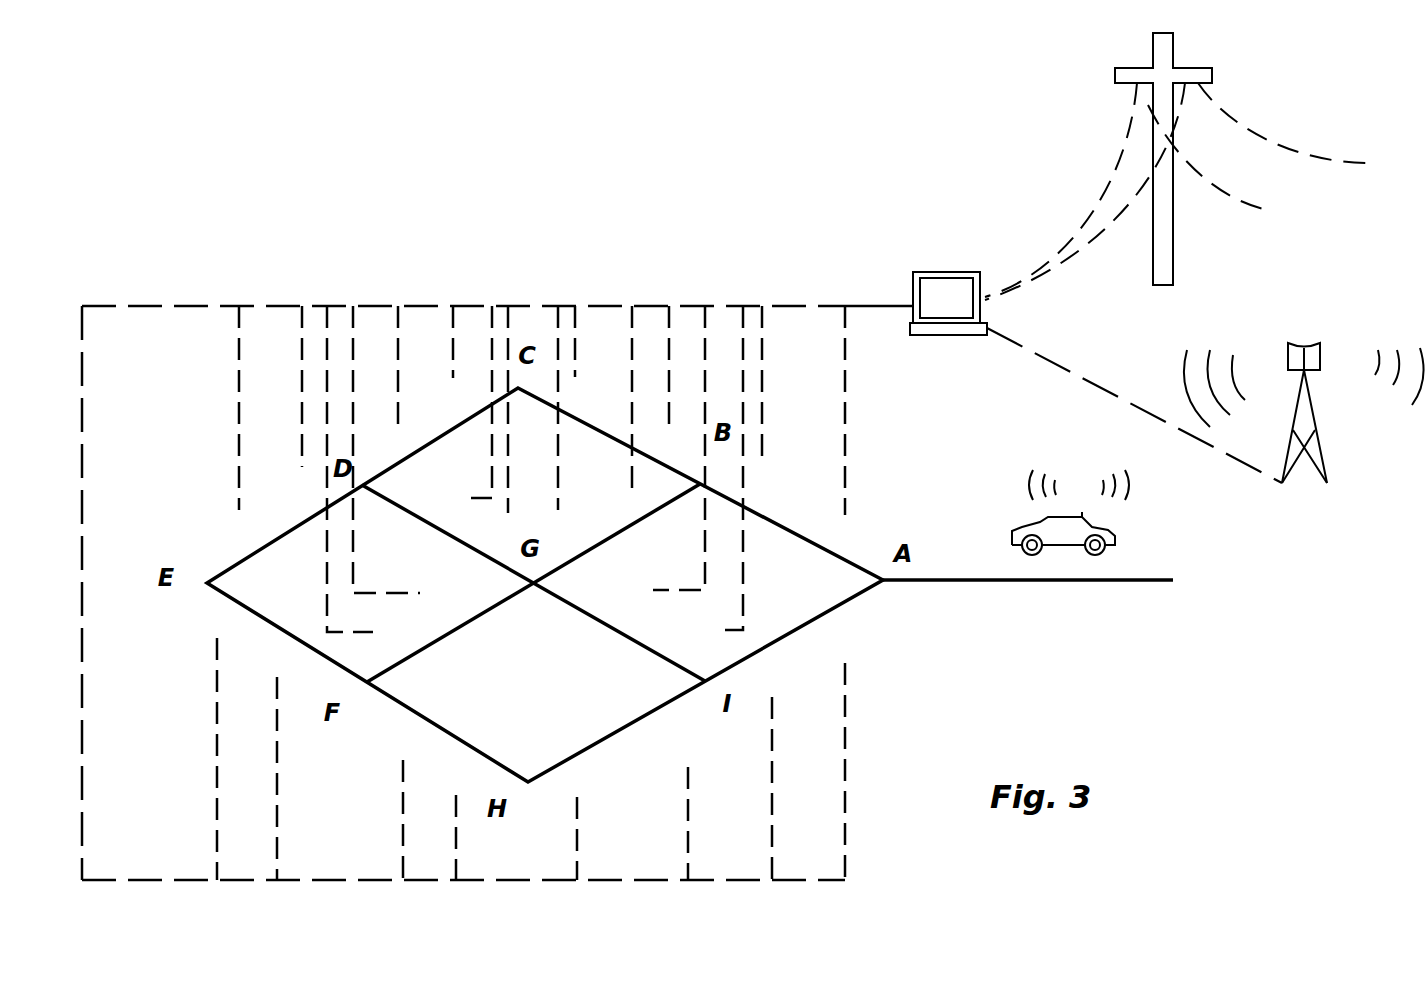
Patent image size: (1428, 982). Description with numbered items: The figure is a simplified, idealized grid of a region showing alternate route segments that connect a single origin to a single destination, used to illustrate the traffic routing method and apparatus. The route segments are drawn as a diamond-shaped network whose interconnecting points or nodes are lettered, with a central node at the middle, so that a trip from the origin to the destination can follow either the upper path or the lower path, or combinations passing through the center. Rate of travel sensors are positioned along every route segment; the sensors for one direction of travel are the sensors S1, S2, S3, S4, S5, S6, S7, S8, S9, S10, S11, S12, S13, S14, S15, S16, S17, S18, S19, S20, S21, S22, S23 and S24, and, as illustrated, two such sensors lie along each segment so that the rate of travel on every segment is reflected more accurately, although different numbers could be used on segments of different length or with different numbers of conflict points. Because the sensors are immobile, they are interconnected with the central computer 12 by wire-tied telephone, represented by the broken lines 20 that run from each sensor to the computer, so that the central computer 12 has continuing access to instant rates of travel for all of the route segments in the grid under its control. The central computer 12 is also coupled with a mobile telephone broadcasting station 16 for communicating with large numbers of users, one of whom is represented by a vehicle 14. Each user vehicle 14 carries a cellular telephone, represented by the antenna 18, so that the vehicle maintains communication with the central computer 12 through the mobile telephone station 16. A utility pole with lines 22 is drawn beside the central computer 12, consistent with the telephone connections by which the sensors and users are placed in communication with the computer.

The central computer 12 is at (985, 310).
The vehicle 14 is at (1027, 530).
The mobile telephone broadcasting station 16 is at (1317, 413).
The antenna 18 is at (1083, 517).
The wire-tied telephone 20 is at (651, 306).
The telephone lines 22 is at (1268, 212).
The rate sensor S1 is at (845, 423).
The rate sensor S2 is at (765, 396).
The rate sensor S3 is at (671, 381).
The rate sensor S4 is at (580, 357).
The rate sensor S5 is at (453, 357).
The rate sensor S6 is at (398, 380).
The rate sensor S7 is at (303, 401).
The rate sensor S8 is at (238, 422).
The rate sensor S9 is at (215, 748).
The rate sensor S10 is at (277, 766).
The rate sensor S11 is at (403, 807).
The rate sensor S12 is at (455, 823).
The rate sensor S13 is at (593, 826).
The rate sensor S14 is at (688, 807).
The rate sensor S15 is at (776, 774).
The rate sensor S16 is at (845, 755).
The rate sensor S17 is at (707, 473).
The rate sensor S18 is at (652, 454).
The rate sensor S19 is at (632, 410).
The rate sensor S20 is at (567, 420).
The rate sensor S21 is at (457, 408).
The rate sensor S22 is at (492, 422).
The rate sensor S23 is at (413, 455).
The rate sensor S24 is at (374, 475).